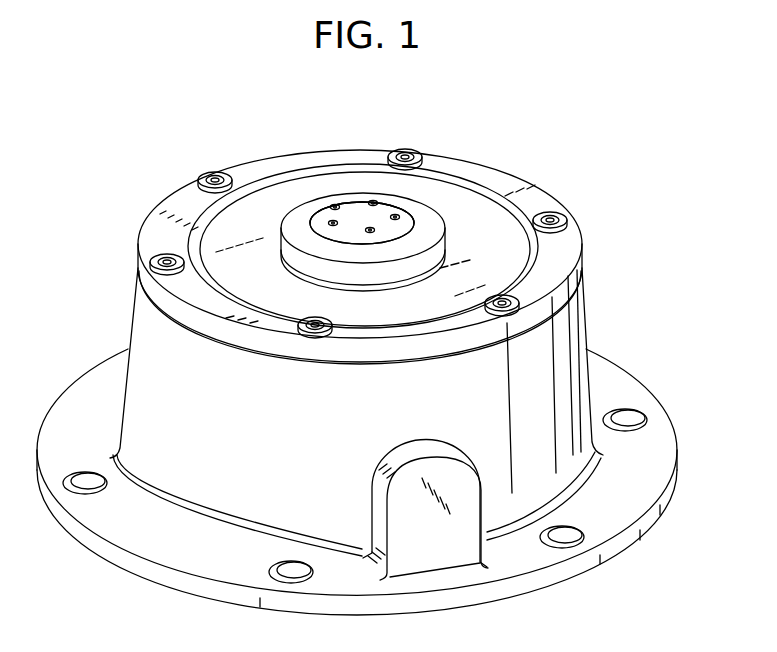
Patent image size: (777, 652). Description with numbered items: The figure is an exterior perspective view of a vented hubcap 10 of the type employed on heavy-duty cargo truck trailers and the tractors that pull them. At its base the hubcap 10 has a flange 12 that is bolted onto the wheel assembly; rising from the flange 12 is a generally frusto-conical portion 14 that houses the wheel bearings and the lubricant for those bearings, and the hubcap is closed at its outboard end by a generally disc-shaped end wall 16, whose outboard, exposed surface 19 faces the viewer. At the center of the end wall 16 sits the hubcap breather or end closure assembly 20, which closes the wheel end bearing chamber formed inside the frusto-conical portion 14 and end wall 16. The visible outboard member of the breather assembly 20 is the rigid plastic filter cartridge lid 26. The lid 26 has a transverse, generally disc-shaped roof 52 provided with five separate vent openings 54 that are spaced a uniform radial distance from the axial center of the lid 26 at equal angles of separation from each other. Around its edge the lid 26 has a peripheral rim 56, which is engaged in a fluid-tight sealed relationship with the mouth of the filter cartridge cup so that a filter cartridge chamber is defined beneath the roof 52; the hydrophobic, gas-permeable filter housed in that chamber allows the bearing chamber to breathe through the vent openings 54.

The vented hubcap 10 is at (501, 112).
The flange 12 is at (612, 388).
The frusto-conical portion 14 is at (148, 330).
The end wall 16 is at (472, 228).
The exposed surface 19 is at (228, 233).
The hubcap breather assembly 20 is at (358, 214).
The filter cartridge lid 26 is at (323, 209).
The roof 52 is at (347, 211).
The vent openings 54 is at (398, 217).
The peripheral rim 56 is at (394, 248).